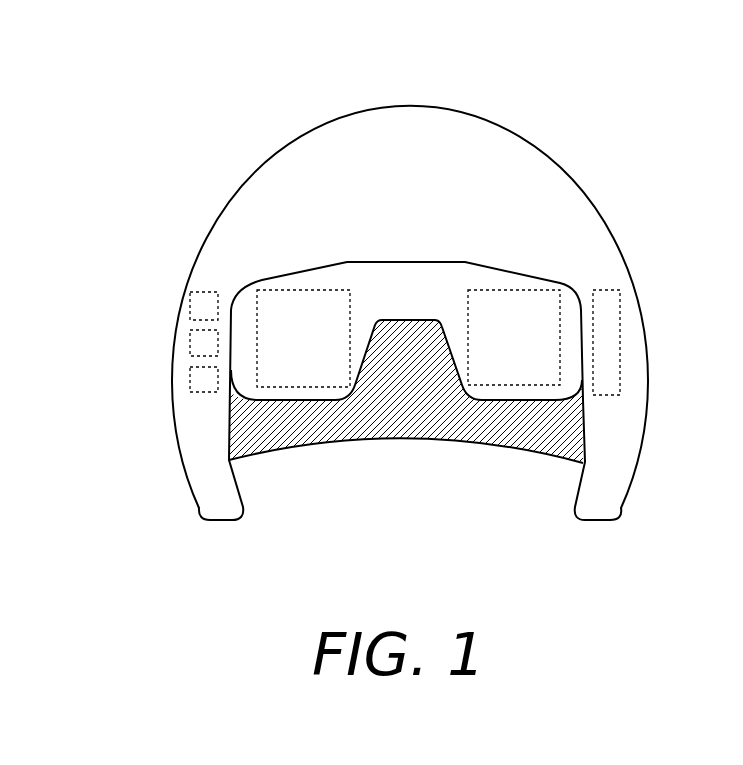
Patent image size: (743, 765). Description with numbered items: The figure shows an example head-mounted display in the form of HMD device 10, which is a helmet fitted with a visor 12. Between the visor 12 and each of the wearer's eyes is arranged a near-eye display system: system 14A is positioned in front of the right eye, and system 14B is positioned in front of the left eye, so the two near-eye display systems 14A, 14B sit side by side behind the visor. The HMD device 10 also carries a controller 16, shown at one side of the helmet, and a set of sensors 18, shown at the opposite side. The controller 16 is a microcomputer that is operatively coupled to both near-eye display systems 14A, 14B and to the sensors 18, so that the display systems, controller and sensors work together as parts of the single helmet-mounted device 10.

The HMD device 10 is at (612, 148).
The visor 12 is at (307, 272).
The near-eye display system 14A is at (287, 350).
The near-eye display system 14B is at (496, 350).
The controller 16 is at (622, 338).
The sensors 18 is at (160, 293).